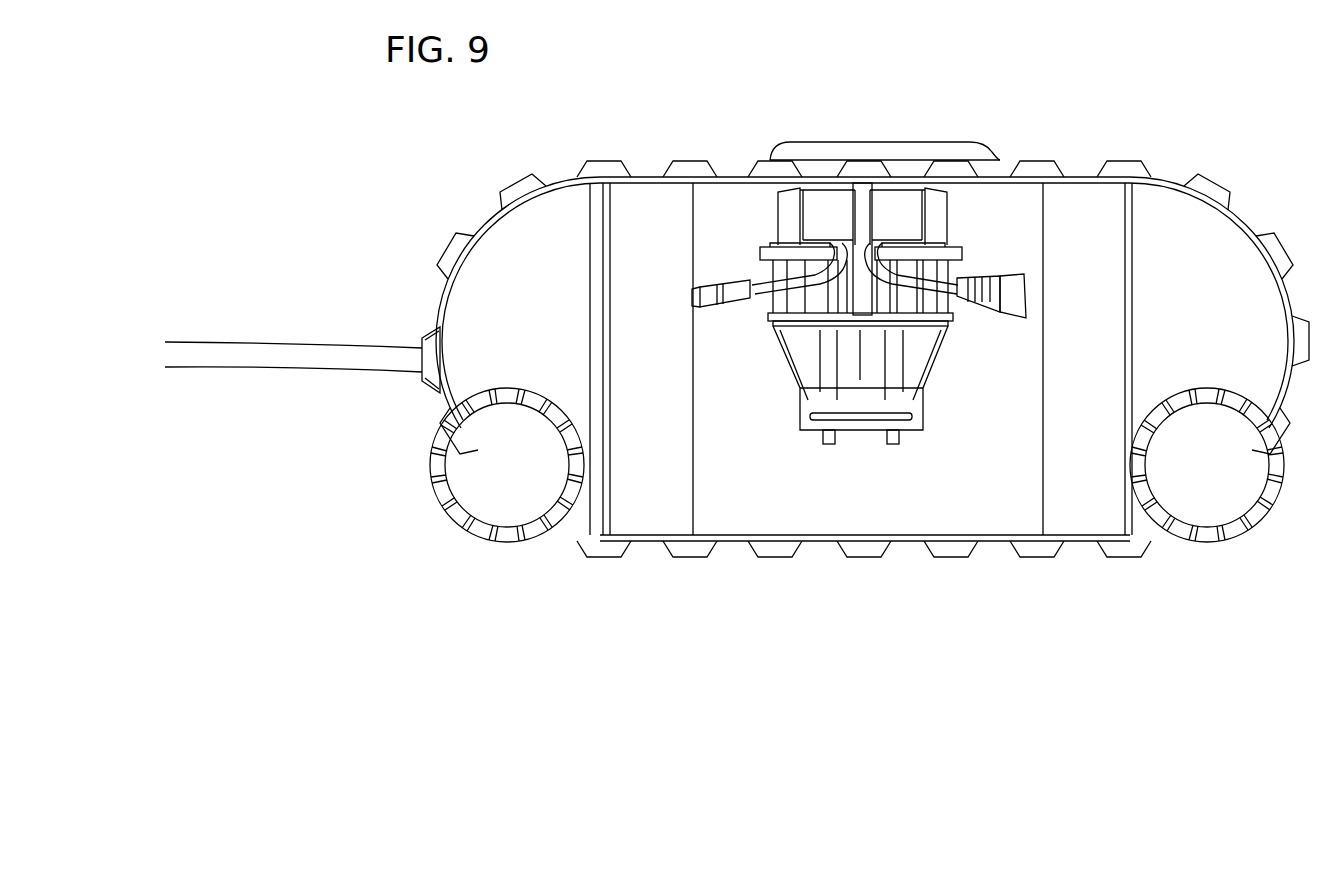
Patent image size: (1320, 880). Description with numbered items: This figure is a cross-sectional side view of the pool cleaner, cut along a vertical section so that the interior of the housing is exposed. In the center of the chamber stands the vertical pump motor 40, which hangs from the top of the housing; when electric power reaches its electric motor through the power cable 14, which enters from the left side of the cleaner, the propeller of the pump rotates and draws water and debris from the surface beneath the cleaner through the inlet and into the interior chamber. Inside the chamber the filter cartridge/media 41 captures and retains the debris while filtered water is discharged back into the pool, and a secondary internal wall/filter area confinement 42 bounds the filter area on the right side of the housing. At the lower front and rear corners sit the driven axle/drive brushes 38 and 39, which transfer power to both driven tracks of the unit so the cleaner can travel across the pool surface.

The power cable 14 is at (342, 358).
The driven axle/drive brush 38 is at (492, 471).
The driven axle/drive brush 39 is at (1192, 471).
The vertical pump motor 40 is at (863, 193).
The filter cartridge/media 41 is at (1075, 223).
The secondary internal wall/filter area confinement 42 is at (1128, 233).